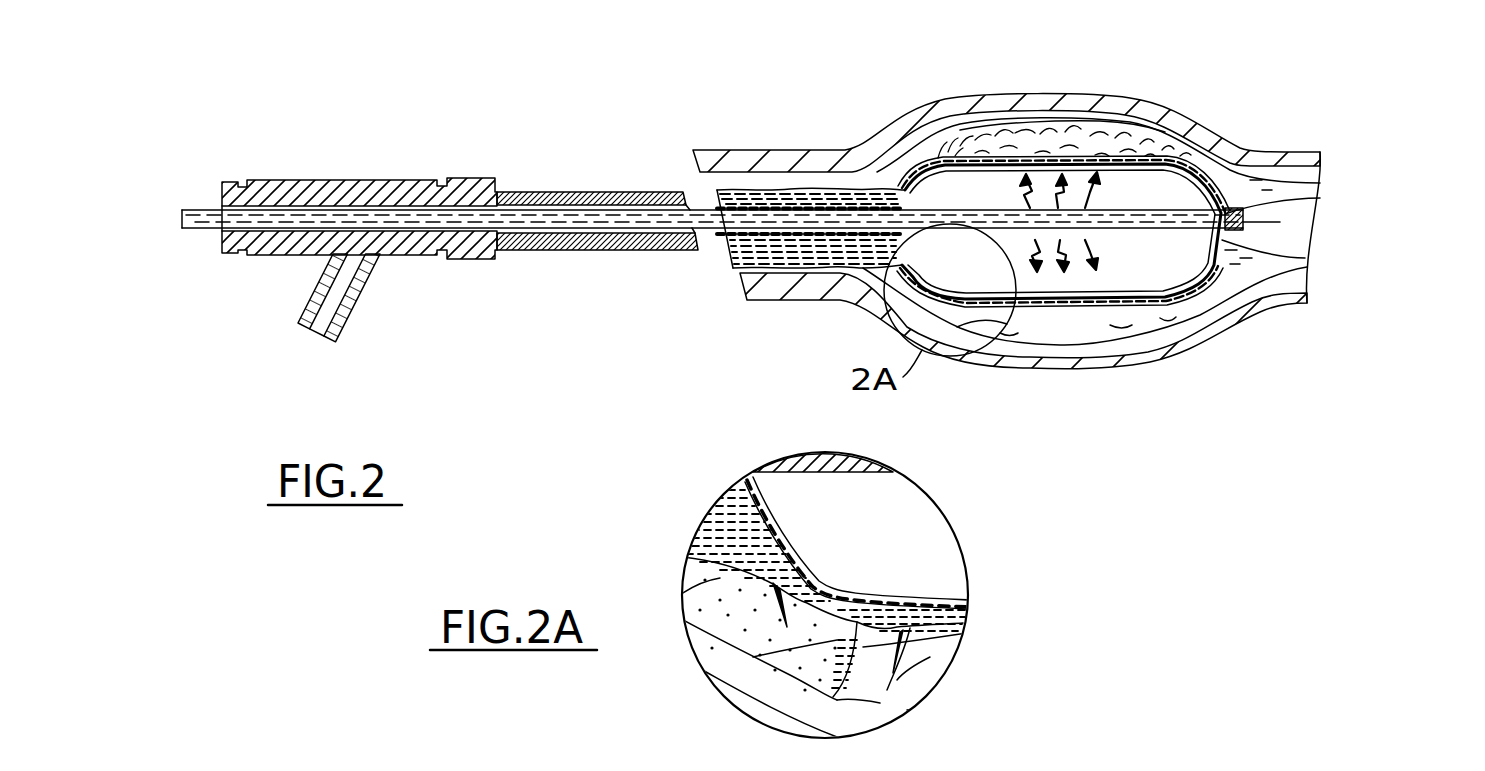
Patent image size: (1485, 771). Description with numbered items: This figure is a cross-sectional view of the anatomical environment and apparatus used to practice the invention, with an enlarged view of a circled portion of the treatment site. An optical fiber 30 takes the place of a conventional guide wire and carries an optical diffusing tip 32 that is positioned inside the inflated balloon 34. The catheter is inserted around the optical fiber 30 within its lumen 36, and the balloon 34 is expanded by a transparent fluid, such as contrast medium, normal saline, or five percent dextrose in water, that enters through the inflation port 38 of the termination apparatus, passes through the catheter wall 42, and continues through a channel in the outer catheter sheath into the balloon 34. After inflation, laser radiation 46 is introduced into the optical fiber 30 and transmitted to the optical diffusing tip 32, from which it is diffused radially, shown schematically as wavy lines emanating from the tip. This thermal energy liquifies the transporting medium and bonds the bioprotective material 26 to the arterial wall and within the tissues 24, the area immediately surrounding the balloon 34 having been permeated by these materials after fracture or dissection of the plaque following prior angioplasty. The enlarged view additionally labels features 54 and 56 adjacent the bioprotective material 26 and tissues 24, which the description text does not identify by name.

In FIG. 2, the laser radiation 46 is at (188, 207).
In FIG. 2, the inflation port 38 is at (308, 334).
In FIG. 2, the lumen 36 is at (813, 255).
In FIG. 2, the catheter wall 42 is at (858, 240).
In FIG. 2, the balloon 34 is at (1075, 302).
In FIG. 2A, the balloon 34 is at (953, 604).
In FIG. 2, the optical diffusing tip 32 is at (1066, 232).
In FIG. 2, the optical fiber 30 is at (1313, 218).
In FIG. 2A, the bioprotective material 26 is at (717, 512).
In FIG. 2A, the tissues 24 is at (950, 637).
In FIG. 2A, the plaque 54 is at (703, 647).
In FIG. 2A, the vessel wall layer 56 is at (727, 697).